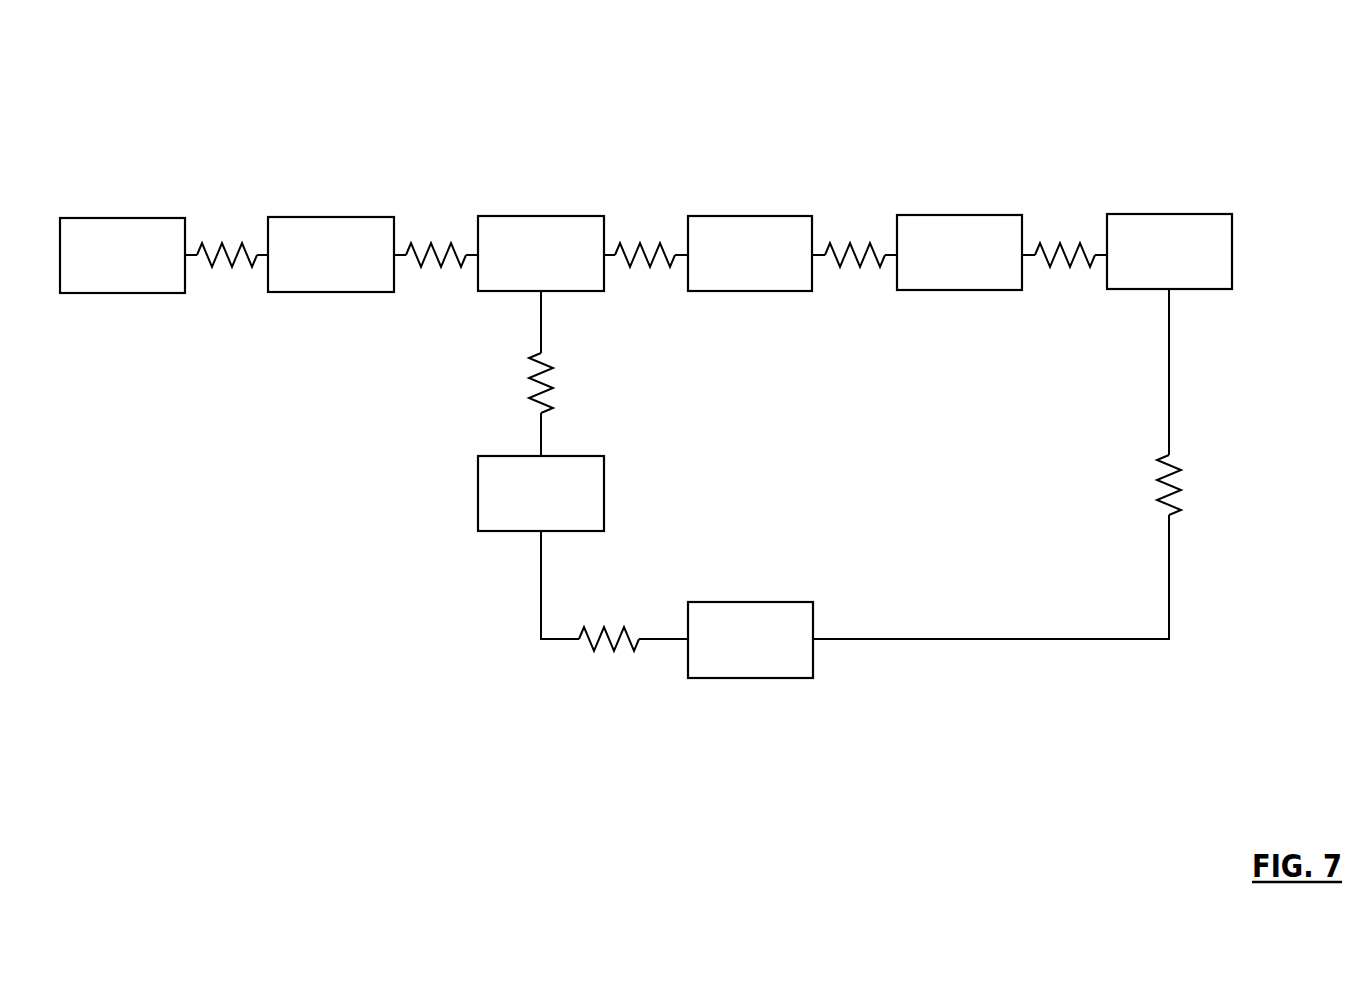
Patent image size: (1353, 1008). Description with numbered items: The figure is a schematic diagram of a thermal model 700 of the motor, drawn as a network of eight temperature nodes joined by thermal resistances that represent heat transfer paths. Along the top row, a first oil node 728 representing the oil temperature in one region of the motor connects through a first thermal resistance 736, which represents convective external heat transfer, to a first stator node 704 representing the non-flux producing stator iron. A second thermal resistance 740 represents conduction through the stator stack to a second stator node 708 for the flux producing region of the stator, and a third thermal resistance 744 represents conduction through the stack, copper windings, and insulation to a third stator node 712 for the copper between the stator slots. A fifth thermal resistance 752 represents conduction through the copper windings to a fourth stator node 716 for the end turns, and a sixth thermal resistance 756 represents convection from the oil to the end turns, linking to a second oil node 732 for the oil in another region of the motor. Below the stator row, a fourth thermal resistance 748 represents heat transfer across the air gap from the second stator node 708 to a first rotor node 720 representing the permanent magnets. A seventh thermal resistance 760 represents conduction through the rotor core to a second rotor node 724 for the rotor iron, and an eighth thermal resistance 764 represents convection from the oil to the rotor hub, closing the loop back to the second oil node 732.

The thermal model 700 is at (188, 83).
The first stator node 704 is at (330, 217).
The second stator node 708 is at (541, 216).
The third stator node 712 is at (750, 216).
The fourth stator node 716 is at (960, 215).
The first rotor node 720 is at (587, 456).
The second rotor node 724 is at (752, 602).
The first oil node 728 is at (121, 218).
The second oil node 732 is at (1170, 214).
The first thermal resistance 736 is at (197, 255).
The second thermal resistance 740 is at (406, 255).
The third thermal resistance 744 is at (615, 255).
The fourth thermal resistance 748 is at (541, 353).
The fifth thermal resistance 752 is at (825, 255).
The sixth thermal resistance 756 is at (1035, 255).
The seventh thermal resistance 760 is at (583, 640).
The eighth thermal resistance 764 is at (1169, 455).